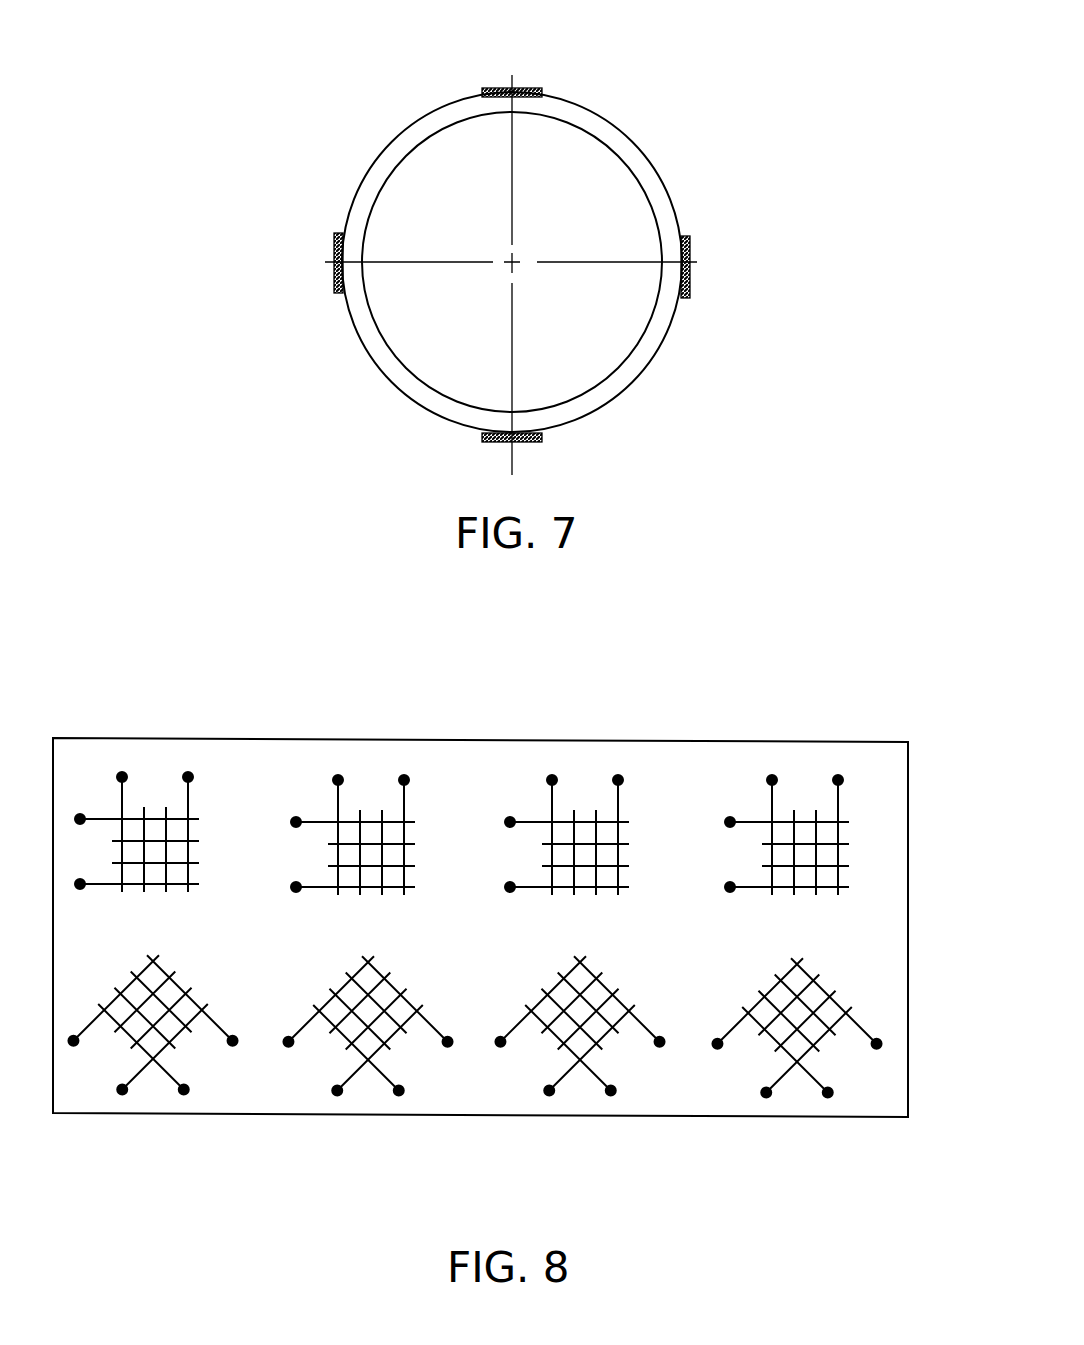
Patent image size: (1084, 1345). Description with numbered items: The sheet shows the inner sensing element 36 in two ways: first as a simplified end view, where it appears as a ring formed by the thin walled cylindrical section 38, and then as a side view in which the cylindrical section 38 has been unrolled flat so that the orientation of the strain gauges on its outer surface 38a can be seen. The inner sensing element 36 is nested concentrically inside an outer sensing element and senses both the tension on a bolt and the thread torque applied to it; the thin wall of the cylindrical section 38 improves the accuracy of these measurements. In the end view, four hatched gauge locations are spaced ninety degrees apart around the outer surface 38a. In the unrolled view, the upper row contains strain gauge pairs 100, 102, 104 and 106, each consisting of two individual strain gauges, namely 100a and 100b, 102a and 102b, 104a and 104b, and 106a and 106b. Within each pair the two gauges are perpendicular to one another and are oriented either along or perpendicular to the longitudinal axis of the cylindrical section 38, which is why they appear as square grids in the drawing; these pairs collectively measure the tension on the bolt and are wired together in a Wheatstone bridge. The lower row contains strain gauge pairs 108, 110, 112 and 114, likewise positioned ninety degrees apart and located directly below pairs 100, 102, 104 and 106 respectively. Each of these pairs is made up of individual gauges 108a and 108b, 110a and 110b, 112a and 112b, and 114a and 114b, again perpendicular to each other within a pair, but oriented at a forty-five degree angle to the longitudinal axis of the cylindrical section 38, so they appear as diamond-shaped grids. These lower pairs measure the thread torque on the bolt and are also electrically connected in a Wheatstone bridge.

In FIG. 7, the inner sensing element 36 is at (727, 78).
In FIG. 8, the inner sensing element 36 is at (140, 635).
In FIG. 7, the thin walled cylindrical section 38 is at (365, 171).
In FIG. 8, the thin walled cylindrical section 38 is at (269, 726).
In FIG. 7, the outer surface 38a is at (397, 137).
In FIG. 8, the outer surface 38a is at (710, 958).
In FIG. 7, the strain gauge pair 100 is at (338, 263).
In FIG. 8, the strain gauge pair 100 is at (165, 752).
In FIG. 8, the strain gauge 100a is at (133, 785).
In FIG. 8, the strain gauge 100b is at (196, 832).
In FIG. 7, the strain gauge pair 102 is at (512, 437).
In FIG. 8, the strain gauge pair 102 is at (383, 749).
In FIG. 8, the strain gauge 102a is at (324, 822).
In FIG. 8, the strain gauge 102b is at (410, 835).
In FIG. 7, the strain gauge pair 104 is at (685, 267).
In FIG. 8, the strain gauge pair 104 is at (594, 759).
In FIG. 8, the strain gauge 104a is at (537, 822).
In FIG. 8, the strain gauge 104b is at (626, 835).
In FIG. 7, the strain gauge pair 106 is at (512, 92).
In FIG. 8, the strain gauge pair 106 is at (818, 756).
In FIG. 8, the strain gauge 106a is at (757, 823).
In FIG. 8, the strain gauge 106b is at (860, 798).
In FIG. 7, the strain gauge pair 108 is at (338, 250).
In FIG. 8, the strain gauge pair 108 is at (146, 1102).
In FIG. 8, the strain gauge 108a is at (95, 1018).
In FIG. 8, the strain gauge 108b is at (185, 1072).
In FIG. 7, the strain gauge pair 110 is at (528, 441).
In FIG. 8, the strain gauge pair 110 is at (365, 1102).
In FIG. 8, the strain gauge 110a is at (302, 1027).
In FIG. 8, the strain gauge 110b is at (395, 1073).
In FIG. 7, the strain gauge pair 112 is at (692, 277).
In FIG. 8, the strain gauge pair 112 is at (580, 1102).
In FIG. 8, the strain gauge 112a is at (518, 1027).
In FIG. 8, the strain gauge 112b is at (600, 1073).
In FIG. 7, the strain gauge pair 114 is at (527, 87).
In FIG. 8, the strain gauge pair 114 is at (796, 1100).
In FIG. 8, the strain gauge 114a is at (737, 1027).
In FIG. 8, the strain gauge 114b is at (818, 1072).